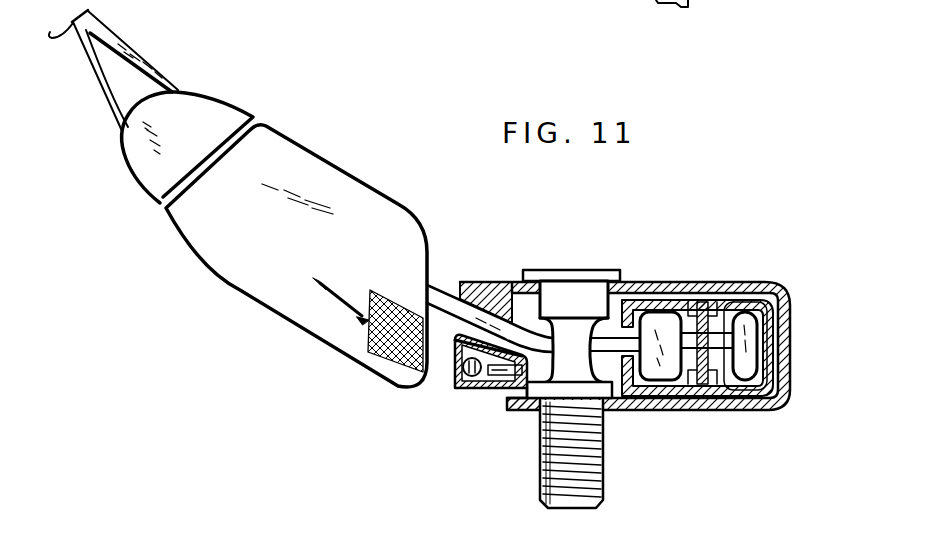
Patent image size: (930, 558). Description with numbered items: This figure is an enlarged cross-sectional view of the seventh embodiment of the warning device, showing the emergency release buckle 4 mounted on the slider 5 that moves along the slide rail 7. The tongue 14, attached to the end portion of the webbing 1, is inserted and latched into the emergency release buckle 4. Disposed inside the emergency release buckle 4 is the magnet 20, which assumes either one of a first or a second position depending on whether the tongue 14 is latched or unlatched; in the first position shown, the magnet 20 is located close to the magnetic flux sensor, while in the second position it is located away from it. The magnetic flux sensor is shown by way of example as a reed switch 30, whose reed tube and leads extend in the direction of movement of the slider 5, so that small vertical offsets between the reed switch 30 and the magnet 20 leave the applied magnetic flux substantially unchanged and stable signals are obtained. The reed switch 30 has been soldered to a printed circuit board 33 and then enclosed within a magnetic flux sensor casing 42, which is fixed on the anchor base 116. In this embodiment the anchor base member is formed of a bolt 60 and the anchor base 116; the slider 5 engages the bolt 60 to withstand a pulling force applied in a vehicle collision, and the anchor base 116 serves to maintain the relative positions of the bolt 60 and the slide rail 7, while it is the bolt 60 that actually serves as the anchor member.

The webbing 1 is at (84, 32).
The tongue 14 is at (212, 118).
The emergency release buckle 4 is at (393, 233).
The slider 5 is at (441, 296).
The magnet 20 is at (382, 370).
The reed switch 30 is at (464, 401).
The magnetic flux sensor casing 42 is at (458, 400).
The printed circuit board 33 is at (488, 400).
The bolt 60 is at (604, 461).
The slide rail 7 is at (788, 312).
The anchor base 116 is at (739, 288).